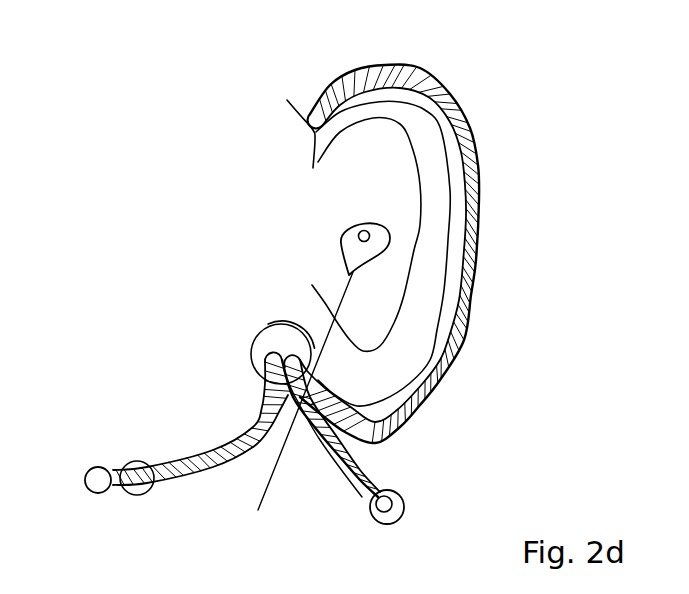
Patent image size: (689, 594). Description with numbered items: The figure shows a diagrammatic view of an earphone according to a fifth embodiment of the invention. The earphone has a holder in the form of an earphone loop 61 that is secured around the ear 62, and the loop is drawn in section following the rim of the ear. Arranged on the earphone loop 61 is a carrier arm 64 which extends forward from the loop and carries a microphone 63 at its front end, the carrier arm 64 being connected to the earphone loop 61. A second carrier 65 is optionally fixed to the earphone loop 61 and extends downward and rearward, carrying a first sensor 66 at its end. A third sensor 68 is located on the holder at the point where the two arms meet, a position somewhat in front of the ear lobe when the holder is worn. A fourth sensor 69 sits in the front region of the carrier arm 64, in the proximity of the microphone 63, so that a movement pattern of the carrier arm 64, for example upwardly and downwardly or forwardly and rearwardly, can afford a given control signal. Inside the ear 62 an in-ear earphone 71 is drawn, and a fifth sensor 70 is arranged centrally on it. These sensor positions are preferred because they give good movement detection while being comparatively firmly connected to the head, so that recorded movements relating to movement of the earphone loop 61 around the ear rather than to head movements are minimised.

The earphone loop 61 is at (350, 71).
The ear 62 is at (392, 357).
The microphone 63 is at (90, 468).
The carrier arm 64 is at (176, 458).
The second carrier 65 is at (347, 488).
The first sensor 66 is at (407, 505).
The third sensor 68 is at (252, 363).
The fourth sensor 69 is at (148, 497).
The fifth sensor 70 is at (362, 226).
The in-ear earphone 71 is at (340, 248).